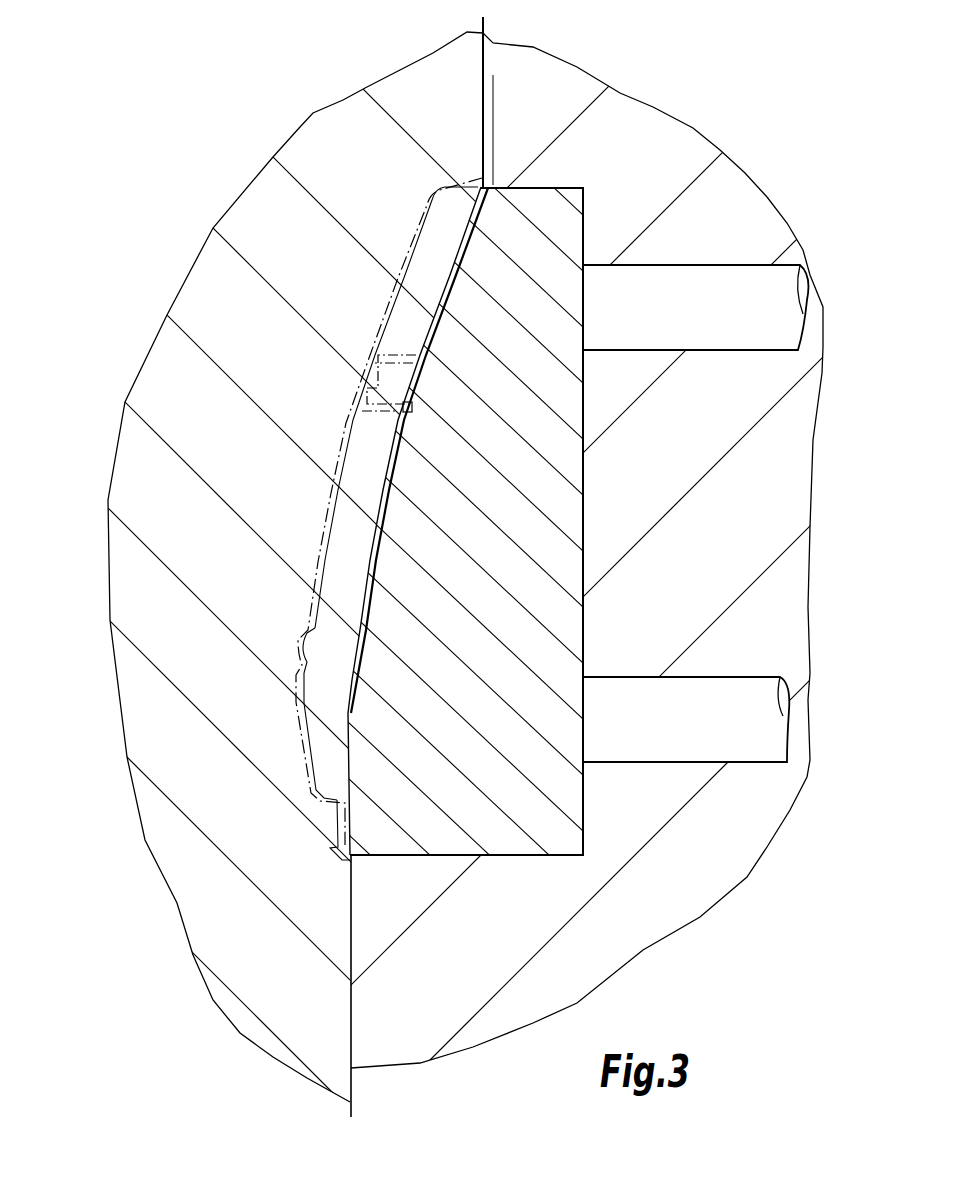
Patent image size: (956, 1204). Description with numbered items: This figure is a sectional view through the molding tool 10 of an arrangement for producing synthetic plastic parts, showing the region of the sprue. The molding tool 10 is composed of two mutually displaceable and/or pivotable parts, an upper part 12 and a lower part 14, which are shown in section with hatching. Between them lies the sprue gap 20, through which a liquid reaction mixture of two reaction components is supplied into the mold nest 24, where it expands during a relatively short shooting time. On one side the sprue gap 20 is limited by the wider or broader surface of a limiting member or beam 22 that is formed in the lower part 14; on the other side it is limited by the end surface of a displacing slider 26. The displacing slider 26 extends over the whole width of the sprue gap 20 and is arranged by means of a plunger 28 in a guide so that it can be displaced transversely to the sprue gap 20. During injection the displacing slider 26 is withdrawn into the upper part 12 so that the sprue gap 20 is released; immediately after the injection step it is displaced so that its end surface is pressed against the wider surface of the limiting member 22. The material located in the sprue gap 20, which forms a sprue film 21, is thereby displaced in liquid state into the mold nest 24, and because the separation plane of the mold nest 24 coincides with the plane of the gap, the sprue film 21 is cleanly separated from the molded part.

The molding tool 10 is at (478, 602).
The upper part 12 is at (667, 163).
The lower part 14 is at (285, 207).
The sprue gap 20 is at (347, 717).
The sprue film 21 is at (347, 693).
The limiting member 22 is at (340, 627).
The mold nest 24 is at (307, 523).
The displacing slider 26 is at (423, 578).
The plunger 28 is at (668, 297).